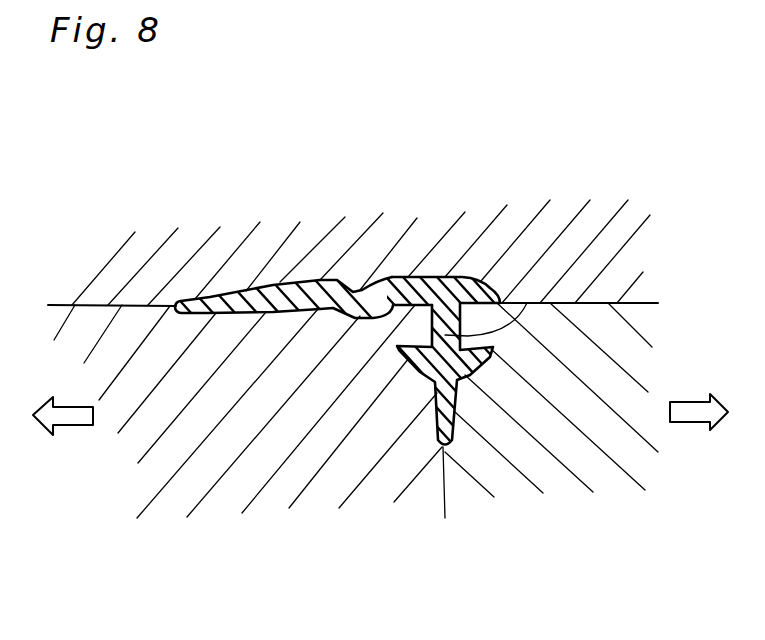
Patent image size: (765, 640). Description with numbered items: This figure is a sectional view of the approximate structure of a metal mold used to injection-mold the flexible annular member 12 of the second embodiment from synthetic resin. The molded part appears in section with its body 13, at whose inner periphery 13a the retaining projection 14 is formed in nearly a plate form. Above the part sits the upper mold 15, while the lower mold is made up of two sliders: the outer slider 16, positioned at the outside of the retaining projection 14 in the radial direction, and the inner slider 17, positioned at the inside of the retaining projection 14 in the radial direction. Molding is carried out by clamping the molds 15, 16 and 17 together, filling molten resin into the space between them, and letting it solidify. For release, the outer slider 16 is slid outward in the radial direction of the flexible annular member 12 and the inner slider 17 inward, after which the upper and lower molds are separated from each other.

The flexible annular member 12 is at (415, 281).
The body 13 is at (278, 286).
The inner periphery 13a is at (486, 284).
The retaining projection 14 is at (523, 303).
The upper mold 15 is at (162, 280).
The outer slider 16 is at (232, 493).
The inner slider 17 is at (562, 477).